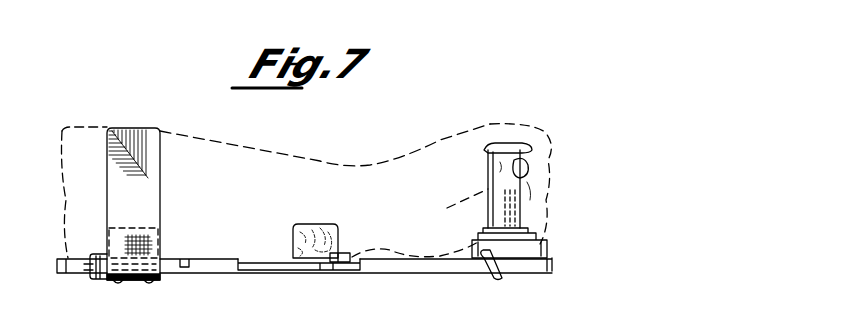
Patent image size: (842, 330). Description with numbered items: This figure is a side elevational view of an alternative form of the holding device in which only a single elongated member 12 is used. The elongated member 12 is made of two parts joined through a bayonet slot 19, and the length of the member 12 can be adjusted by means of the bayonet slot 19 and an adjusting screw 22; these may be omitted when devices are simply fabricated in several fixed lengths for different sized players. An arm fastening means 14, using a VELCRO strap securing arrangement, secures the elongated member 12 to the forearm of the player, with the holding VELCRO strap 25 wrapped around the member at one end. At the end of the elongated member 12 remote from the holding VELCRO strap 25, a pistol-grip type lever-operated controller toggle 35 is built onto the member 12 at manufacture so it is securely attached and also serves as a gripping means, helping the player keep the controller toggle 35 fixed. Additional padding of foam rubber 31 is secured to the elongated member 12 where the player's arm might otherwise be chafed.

The elongated member 12 is at (388, 262).
The arm fastening means 14 is at (131, 126).
The bayonet slot 19 is at (272, 265).
The adjusting screw 22 is at (338, 253).
The holding VELCRO strap 25 is at (150, 192).
The padding of foam rubber 31 is at (311, 229).
The pistol-grip type lever-operated controller toggle 35 is at (508, 147).